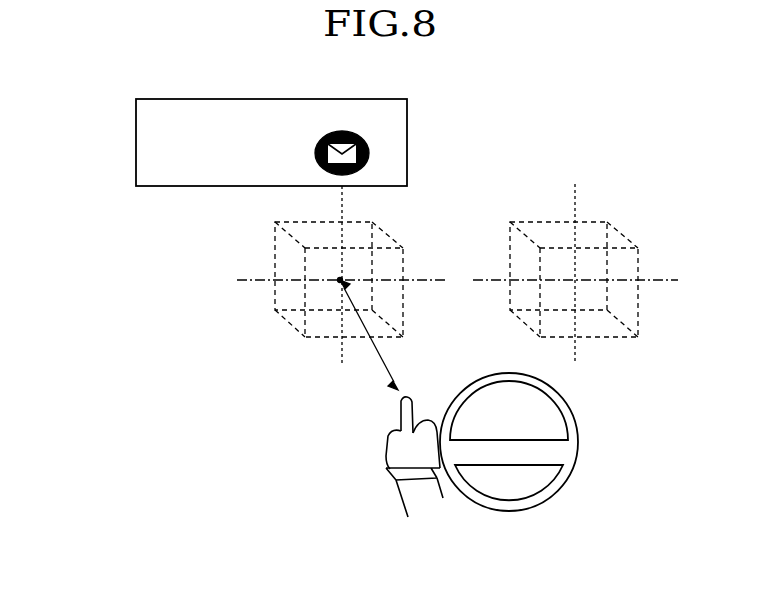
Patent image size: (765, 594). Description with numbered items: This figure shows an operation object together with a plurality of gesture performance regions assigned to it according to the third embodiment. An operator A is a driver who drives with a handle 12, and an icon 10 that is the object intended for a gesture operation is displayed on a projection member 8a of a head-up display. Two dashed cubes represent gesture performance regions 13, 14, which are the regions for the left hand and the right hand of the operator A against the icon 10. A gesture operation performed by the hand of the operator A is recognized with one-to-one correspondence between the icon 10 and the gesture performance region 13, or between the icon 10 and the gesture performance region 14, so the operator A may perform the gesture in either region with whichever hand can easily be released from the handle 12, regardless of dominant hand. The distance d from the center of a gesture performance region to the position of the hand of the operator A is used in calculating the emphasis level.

The projection member 8a is at (136, 132).
The icon 10 is at (368, 152).
The gesture performance region 13 is at (275, 254).
The gesture performance region 14 is at (619, 234).
The distance d is at (374, 335).
The operator A is at (386, 469).
The handle 12 is at (578, 420).